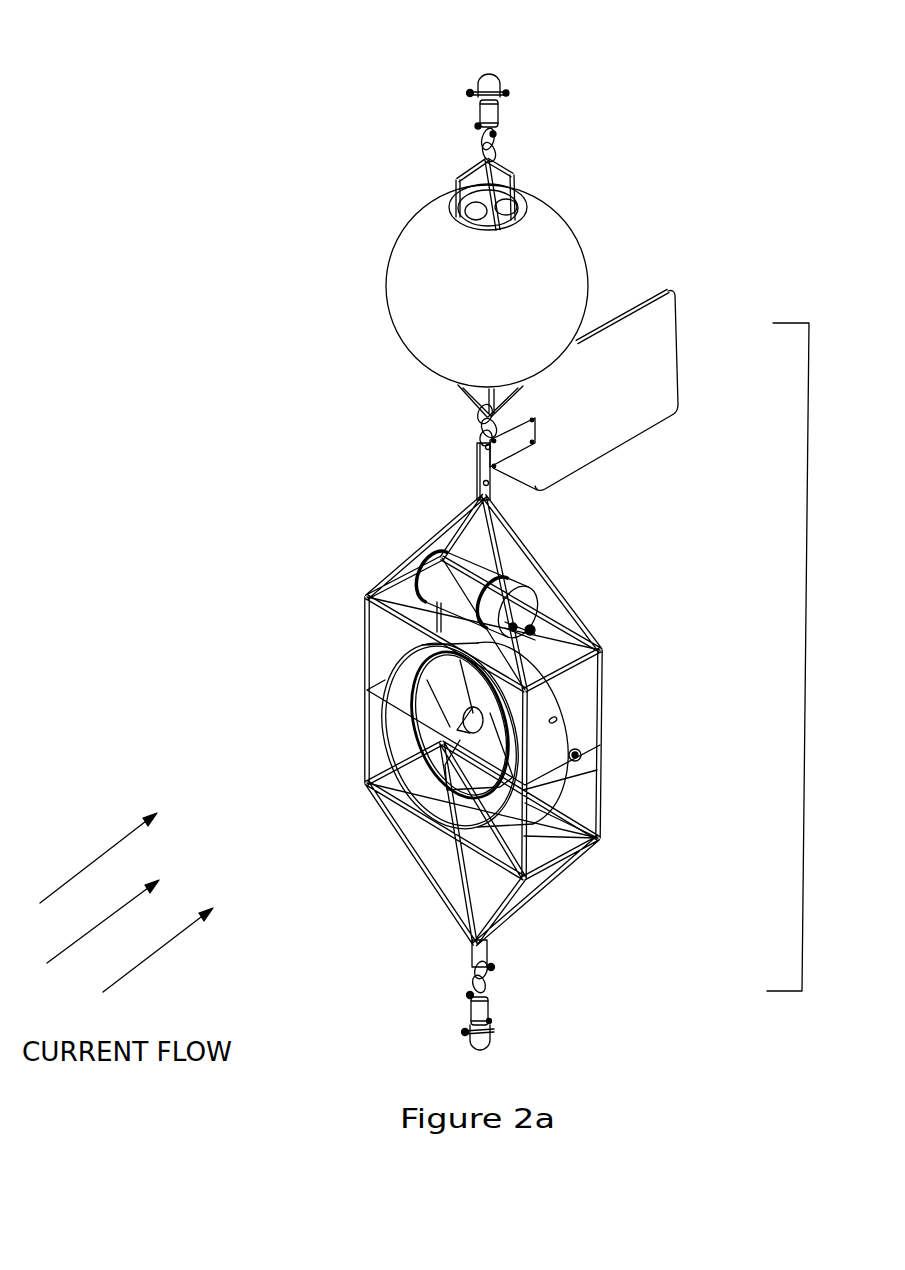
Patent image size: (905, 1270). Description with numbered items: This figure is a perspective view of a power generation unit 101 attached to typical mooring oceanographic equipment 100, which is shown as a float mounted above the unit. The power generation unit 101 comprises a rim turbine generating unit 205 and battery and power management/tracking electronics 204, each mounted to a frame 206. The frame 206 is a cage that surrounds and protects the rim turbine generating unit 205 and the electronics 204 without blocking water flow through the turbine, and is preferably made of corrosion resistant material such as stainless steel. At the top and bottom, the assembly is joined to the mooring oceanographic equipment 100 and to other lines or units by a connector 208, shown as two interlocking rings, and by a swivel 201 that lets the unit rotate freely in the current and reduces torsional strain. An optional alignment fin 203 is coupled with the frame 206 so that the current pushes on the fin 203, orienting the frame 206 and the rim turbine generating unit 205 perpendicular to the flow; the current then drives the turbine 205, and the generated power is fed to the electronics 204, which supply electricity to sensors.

The mooring oceanographic equipment 100 is at (415, 293).
The power generation unit 101 is at (820, 657).
The swivel 201 is at (484, 115).
The alignment fin 203 is at (598, 409).
The battery and power management/tracking electronics 204 is at (467, 590).
The rim turbine generating unit 205 is at (548, 733).
The frame 206 is at (367, 770).
The connector 208 is at (515, 94).